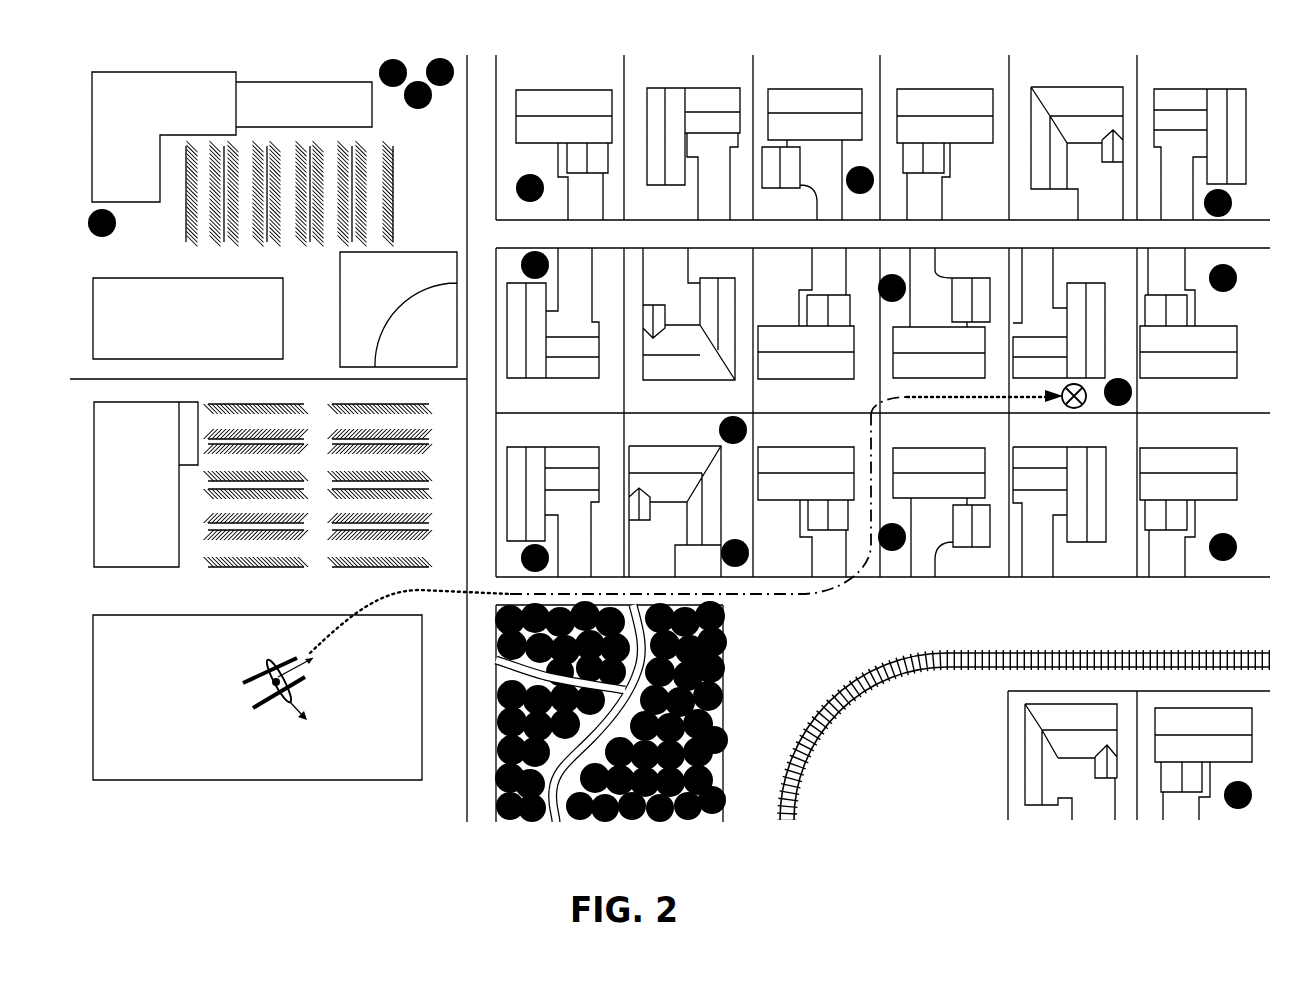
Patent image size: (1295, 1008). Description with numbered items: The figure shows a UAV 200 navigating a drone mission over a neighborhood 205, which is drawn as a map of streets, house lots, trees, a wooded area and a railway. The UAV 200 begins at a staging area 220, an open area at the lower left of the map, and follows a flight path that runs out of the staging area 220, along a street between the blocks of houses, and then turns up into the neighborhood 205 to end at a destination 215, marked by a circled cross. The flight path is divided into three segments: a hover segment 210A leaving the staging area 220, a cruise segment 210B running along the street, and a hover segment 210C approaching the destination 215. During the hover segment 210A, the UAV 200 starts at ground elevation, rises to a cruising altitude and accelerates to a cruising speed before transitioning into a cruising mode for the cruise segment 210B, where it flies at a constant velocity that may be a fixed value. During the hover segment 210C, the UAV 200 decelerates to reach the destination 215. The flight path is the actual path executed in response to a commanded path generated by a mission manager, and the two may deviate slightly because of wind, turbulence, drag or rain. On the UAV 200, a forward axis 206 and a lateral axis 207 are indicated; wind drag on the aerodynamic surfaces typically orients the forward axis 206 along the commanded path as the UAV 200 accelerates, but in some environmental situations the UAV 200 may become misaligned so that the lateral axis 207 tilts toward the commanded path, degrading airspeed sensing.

The UAV 200 is at (255, 670).
The neighborhood 205 is at (1157, 65).
The forward axis 206 is at (311, 668).
The lateral axis 207 is at (297, 712).
The hover segment 210A is at (425, 597).
The cruise segment 210B is at (750, 600).
The hover segment 210C is at (960, 399).
The destination 215 is at (1087, 408).
The staging area 220 is at (145, 767).